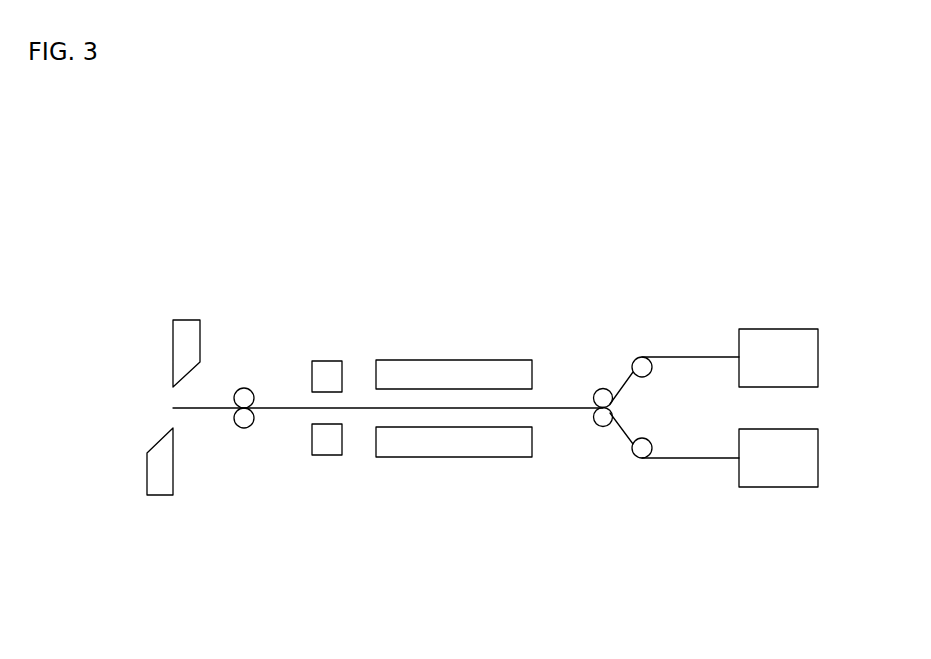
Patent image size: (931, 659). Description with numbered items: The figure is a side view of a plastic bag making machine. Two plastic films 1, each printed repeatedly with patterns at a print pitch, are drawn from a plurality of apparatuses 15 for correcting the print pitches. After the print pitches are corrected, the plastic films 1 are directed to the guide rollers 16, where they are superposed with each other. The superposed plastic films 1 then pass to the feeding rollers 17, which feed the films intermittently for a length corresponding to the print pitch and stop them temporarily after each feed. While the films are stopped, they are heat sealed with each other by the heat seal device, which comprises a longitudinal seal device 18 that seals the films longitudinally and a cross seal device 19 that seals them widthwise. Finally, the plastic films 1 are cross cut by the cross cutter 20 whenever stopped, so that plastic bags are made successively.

The plastic film 1 is at (675, 355).
The apparatus for correcting print pitches 15 is at (765, 329).
The guide rollers 16 is at (602, 428).
The feeding rollers 17 is at (255, 393).
The longitudinal seal device 18 is at (458, 363).
The cross seal device 19 is at (332, 360).
The cross cutter 20 is at (190, 318).